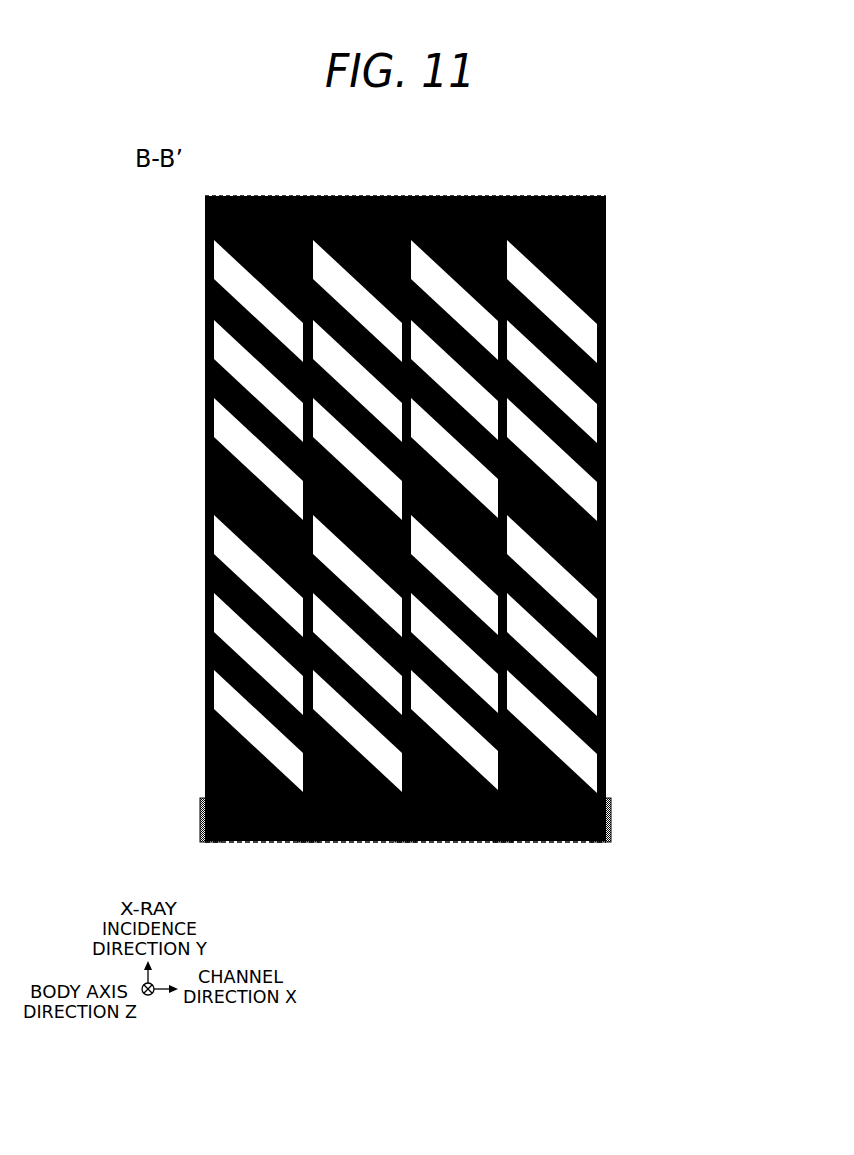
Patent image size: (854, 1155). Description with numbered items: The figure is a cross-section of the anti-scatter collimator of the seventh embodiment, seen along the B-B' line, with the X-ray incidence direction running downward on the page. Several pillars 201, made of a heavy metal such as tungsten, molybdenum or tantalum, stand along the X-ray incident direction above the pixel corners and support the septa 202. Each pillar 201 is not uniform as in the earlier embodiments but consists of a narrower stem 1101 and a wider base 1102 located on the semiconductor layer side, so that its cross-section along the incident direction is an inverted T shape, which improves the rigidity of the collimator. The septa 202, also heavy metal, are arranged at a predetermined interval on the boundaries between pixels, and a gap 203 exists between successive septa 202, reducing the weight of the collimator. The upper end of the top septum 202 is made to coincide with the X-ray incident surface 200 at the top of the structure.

The X-ray incident surface 200 is at (488, 503).
The pillar 201 is at (488, 527).
The septum 202 is at (606, 263).
The gap 203 is at (582, 498).
The stem 1101 is at (606, 763).
The base 1102 is at (611, 820).